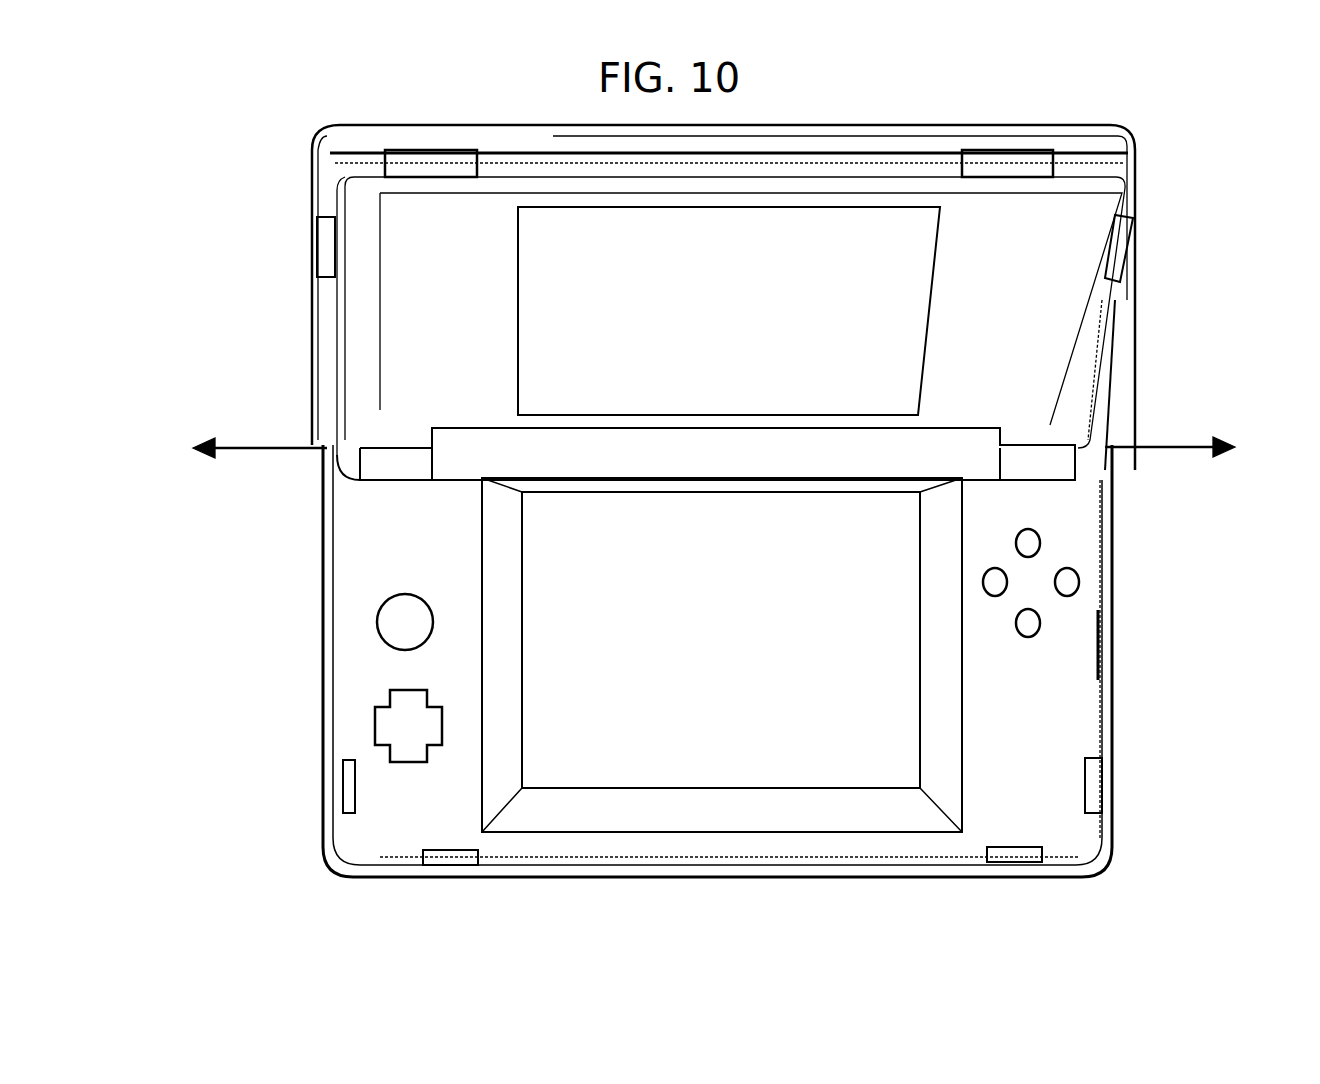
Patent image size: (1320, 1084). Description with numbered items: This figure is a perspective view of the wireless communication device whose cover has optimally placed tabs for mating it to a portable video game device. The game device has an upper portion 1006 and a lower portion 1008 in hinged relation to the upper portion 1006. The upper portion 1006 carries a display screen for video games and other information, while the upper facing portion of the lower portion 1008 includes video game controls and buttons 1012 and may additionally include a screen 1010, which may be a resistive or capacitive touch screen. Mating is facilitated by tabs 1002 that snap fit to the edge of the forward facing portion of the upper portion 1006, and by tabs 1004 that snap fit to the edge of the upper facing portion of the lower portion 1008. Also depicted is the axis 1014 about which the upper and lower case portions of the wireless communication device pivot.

The tabs 1002 is at (430, 150).
The tabs 1004 is at (442, 855).
The upper portion 1006 is at (1005, 305).
The lower portion 1008 is at (1028, 648).
The screen 1010 is at (620, 325).
The video game controls and buttons 1012 is at (405, 625).
The axis 1014 is at (258, 453).